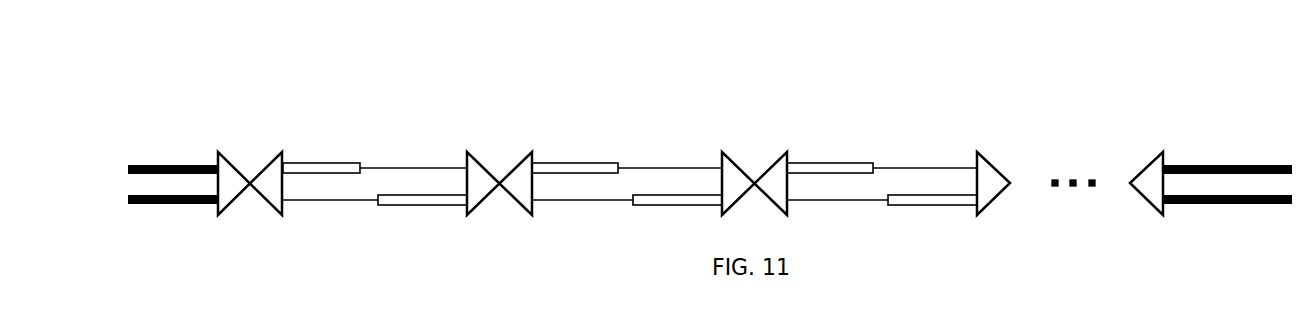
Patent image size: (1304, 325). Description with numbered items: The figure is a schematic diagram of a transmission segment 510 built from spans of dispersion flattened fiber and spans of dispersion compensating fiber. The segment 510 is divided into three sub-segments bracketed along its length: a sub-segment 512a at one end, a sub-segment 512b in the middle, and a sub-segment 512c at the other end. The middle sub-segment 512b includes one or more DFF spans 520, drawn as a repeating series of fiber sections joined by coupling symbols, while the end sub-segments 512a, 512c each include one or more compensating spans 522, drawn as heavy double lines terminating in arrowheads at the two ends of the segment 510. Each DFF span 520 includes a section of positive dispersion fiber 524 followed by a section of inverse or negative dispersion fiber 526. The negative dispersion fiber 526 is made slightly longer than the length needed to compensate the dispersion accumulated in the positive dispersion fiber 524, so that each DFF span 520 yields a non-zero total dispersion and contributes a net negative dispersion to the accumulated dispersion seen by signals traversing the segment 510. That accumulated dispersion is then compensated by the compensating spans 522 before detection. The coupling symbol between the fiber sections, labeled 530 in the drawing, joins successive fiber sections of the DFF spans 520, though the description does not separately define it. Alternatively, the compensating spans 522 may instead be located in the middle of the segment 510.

The transmission segment 510 is at (1288, 55).
The sub-segment 512a is at (250, 137).
The sub-segment 512b is at (250, 137).
The sub-segment 512c is at (1130, 137).
The DFF span 520 is at (377, 231).
The compensating span 522 is at (202, 204).
The positive dispersion fiber 524 is at (316, 173).
The negative dispersion fiber 526 is at (425, 168).
The coupler 530 is at (518, 207).